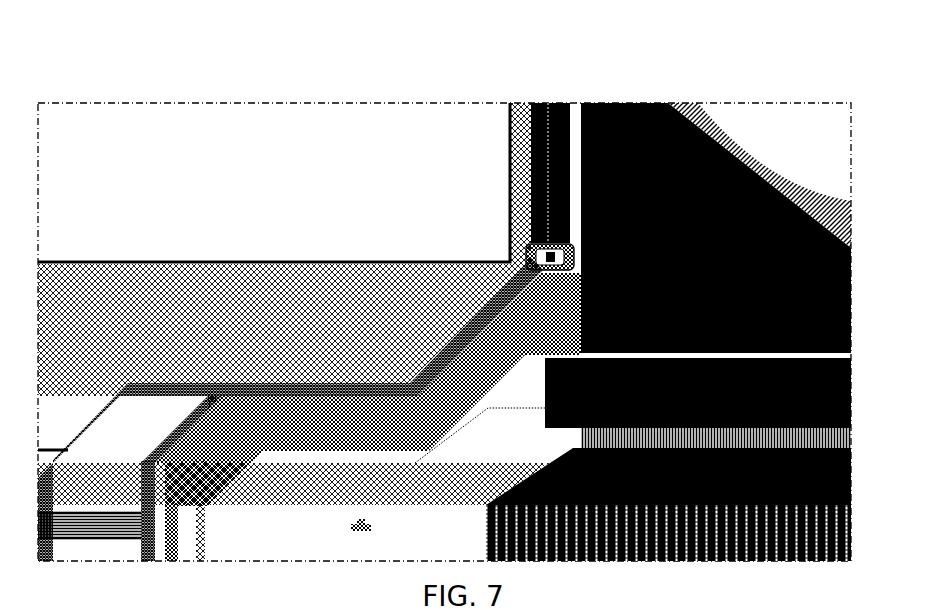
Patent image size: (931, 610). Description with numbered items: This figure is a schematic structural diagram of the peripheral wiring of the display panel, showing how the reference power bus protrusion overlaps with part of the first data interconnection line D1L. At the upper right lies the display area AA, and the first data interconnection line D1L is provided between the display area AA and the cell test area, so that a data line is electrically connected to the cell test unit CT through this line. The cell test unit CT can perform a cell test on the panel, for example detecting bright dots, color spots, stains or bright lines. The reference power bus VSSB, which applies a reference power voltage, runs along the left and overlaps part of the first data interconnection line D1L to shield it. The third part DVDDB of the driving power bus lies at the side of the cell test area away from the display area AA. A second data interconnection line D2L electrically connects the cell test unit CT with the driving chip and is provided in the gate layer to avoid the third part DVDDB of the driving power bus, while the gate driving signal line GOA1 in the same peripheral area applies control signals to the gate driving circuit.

The display area AA is at (783, 112).
The reference power bus VSSB is at (284, 249).
The gate driver on array circuit line GOA1 is at (361, 417).
The third part of the driving power bus DVDDB is at (294, 497).
The first data interconnection line D1L is at (716, 228).
The cell test unit CT is at (698, 403).
The second data interconnection line D2L is at (668, 504).